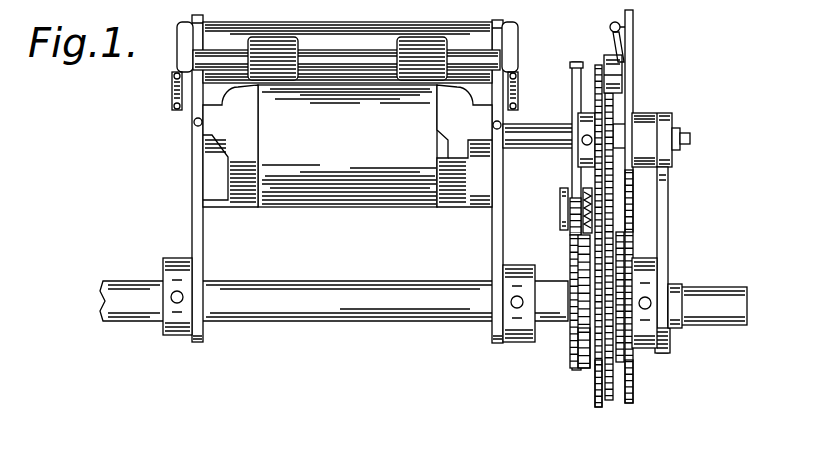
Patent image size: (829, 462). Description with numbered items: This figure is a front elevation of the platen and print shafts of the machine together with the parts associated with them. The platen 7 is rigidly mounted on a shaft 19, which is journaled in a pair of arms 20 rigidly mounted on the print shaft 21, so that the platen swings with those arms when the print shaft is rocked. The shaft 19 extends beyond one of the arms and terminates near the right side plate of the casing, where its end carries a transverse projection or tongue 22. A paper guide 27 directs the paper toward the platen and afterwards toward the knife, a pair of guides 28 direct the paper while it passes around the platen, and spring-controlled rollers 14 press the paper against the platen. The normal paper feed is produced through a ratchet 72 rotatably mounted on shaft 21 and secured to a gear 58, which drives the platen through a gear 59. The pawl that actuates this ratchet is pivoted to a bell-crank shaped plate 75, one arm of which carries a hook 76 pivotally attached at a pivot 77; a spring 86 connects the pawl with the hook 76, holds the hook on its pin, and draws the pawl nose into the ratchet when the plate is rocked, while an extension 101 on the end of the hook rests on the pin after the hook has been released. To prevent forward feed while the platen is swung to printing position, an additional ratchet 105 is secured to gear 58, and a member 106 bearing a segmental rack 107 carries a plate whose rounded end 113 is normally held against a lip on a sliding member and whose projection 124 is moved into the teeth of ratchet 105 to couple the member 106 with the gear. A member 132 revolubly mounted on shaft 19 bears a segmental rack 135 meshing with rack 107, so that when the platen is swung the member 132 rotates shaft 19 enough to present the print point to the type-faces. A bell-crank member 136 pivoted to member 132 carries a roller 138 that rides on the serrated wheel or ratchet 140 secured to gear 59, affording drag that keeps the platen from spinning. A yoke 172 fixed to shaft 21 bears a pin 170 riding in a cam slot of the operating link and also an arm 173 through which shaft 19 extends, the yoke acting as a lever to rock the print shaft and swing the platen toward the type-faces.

The platen 7 is at (347, 146).
The spring-controlled rollers 14 is at (262, 54).
The shaft 19 is at (547, 128).
The arms 20 is at (201, 226).
The print shaft 21 is at (360, 305).
The projection or tongue 22 is at (687, 140).
The paper guide 27 is at (362, 30).
The guides 28 is at (347, 146).
The gear 58 is at (592, 338).
The gear 59 is at (596, 108).
The ratchet 72 is at (577, 280).
The plate 75 is at (572, 247).
The hook 76 is at (576, 172).
The pivot 77 is at (562, 212).
The spring 86 is at (584, 198).
The extension 101 is at (574, 70).
The additional ratchet 105 is at (600, 370).
The member 106 is at (633, 288).
The segmental rack 107 is at (633, 220).
The rounded end 113 is at (622, 396).
The projection 124 is at (622, 237).
The member 132 is at (630, 50).
The segmental rack 135 is at (632, 132).
The member 136 is at (614, 45).
The roller 138 is at (608, 60).
The wheel or ratchet 140 is at (613, 97).
The pin 170 is at (681, 305).
The yoke 172 is at (672, 337).
The arm 173 is at (666, 183).